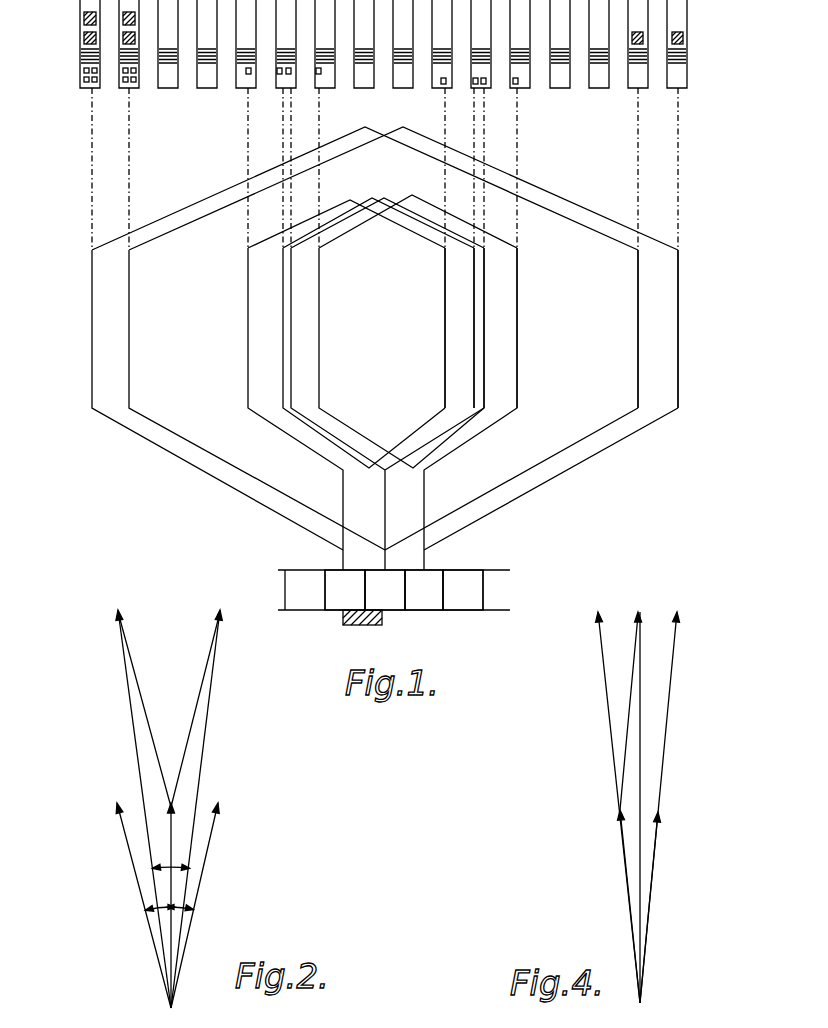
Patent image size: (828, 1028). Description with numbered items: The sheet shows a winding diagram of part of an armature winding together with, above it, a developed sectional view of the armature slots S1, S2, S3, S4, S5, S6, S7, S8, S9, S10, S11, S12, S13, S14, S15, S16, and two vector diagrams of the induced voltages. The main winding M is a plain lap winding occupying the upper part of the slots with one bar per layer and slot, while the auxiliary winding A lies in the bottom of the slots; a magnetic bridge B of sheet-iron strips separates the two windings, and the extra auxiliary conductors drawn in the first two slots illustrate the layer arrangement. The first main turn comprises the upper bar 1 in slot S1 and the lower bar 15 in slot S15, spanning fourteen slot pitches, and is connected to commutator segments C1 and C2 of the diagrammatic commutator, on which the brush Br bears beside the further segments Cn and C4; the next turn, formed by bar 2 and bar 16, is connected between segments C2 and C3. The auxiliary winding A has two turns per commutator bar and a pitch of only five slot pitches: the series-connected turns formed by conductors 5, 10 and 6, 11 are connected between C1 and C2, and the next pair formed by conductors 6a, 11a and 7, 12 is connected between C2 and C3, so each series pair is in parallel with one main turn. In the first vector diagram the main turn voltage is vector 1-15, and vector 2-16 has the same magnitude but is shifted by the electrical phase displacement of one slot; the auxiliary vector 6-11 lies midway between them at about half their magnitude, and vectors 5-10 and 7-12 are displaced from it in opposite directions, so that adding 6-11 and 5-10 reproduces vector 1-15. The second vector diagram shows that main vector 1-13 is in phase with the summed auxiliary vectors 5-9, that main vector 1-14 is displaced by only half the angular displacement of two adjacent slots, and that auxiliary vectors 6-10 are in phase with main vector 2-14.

In FIG. 1, the upper bar in slot S1 1 is at (84, 18).
In FIG. 1, the upper bar in slot S2 2 is at (135, 20).
In FIG. 1, the auxiliary winding conductor in slot S5 5 is at (247, 76).
In FIG. 1, the auxiliary winding conductor in slot S6 6 is at (279, 76).
In FIG. 1, the auxiliary winding conductor in slot S6 6a is at (289, 76).
In FIG. 1, the auxiliary winding conductor in slot S7 7 is at (319, 76).
In FIG. 1, the auxiliary winding conductor in slot S10 10 is at (443, 86).
In FIG. 1, the auxiliary winding conductor in slot S11 11 is at (475, 86).
In FIG. 1, the auxiliary winding conductor in slot S11 11a is at (484, 86).
In FIG. 1, the auxiliary winding conductor in slot S12 12 is at (516, 86).
In FIG. 1, the lower bar in slot S15 15 is at (630, 48).
In FIG. 1, the lower bar in slot S16 16 is at (670, 48).
In FIG. 1, the main winding M is at (123, 38).
In FIG. 1, the magnetic bridge B is at (123, 57).
In FIG. 1, the auxiliary winding A is at (122, 83).
In FIG. 1, the armature slot S1 is at (90, 44).
In FIG. 1, the armature slot S2 is at (129, 44).
In FIG. 1, the armature slot S3 is at (168, 44).
In FIG. 1, the armature slot S4 is at (207, 44).
In FIG. 1, the armature slot S5 is at (246, 44).
In FIG. 1, the armature slot S6 is at (286, 44).
In FIG. 1, the armature slot S7 is at (325, 44).
In FIG. 1, the armature slot S8 is at (364, 44).
In FIG. 1, the armature slot S9 is at (403, 44).
In FIG. 1, the armature slot S10 is at (445, 44).
In FIG. 1, the armature slot S11 is at (484, 44).
In FIG. 1, the armature slot S12 is at (523, 44).
In FIG. 1, the armature slot S13 is at (563, 44).
In FIG. 1, the armature slot S14 is at (602, 44).
In FIG. 1, the armature slot S15 is at (641, 44).
In FIG. 1, the armature slot S16 is at (680, 44).
In FIG. 1, the commutator segment Cn is at (394, 590).
In FIG. 1, the commutator segment C1 is at (345, 590).
In FIG. 1, the commutator segment C2 is at (385, 590).
In FIG. 1, the commutator segment C3 is at (424, 590).
In FIG. 1, the commutator segment C4 is at (463, 590).
In FIG. 1, the brush Br is at (415, 636).
In FIG. 2, the voltage vector of main turn 1, 15 1-15 is at (131, 692).
In FIG. 2, the voltage vector of main turn 2, 16 2-16 is at (212, 692).
In FIG. 2, the voltage vector of auxiliary turn 5, 10 5-10 is at (126, 634).
In FIG. 2, the voltage vector of auxiliary turn 7, 12 7-12 is at (207, 661).
In FIG. 2, the voltage vector of auxiliary turn 6, 11 6-11 is at (173, 948).
In FIG. 4, the voltage vector of main turn 1, 13 1-13 is at (610, 798).
In FIG. 4, the voltage vector of main turn 1a, 14 1-14 is at (639, 798).
In FIG. 4, the voltage vector of main turn 2, 14a 2-14 is at (667, 798).
In FIG. 4, the voltage vectors of auxiliary turns 6a, 10a and 6b, 10b 6-10 is at (636, 662).
In FIG. 4, the voltage vectors of auxiliary turns 5, 9 and 5a, 9a 5-9 is at (608, 720).